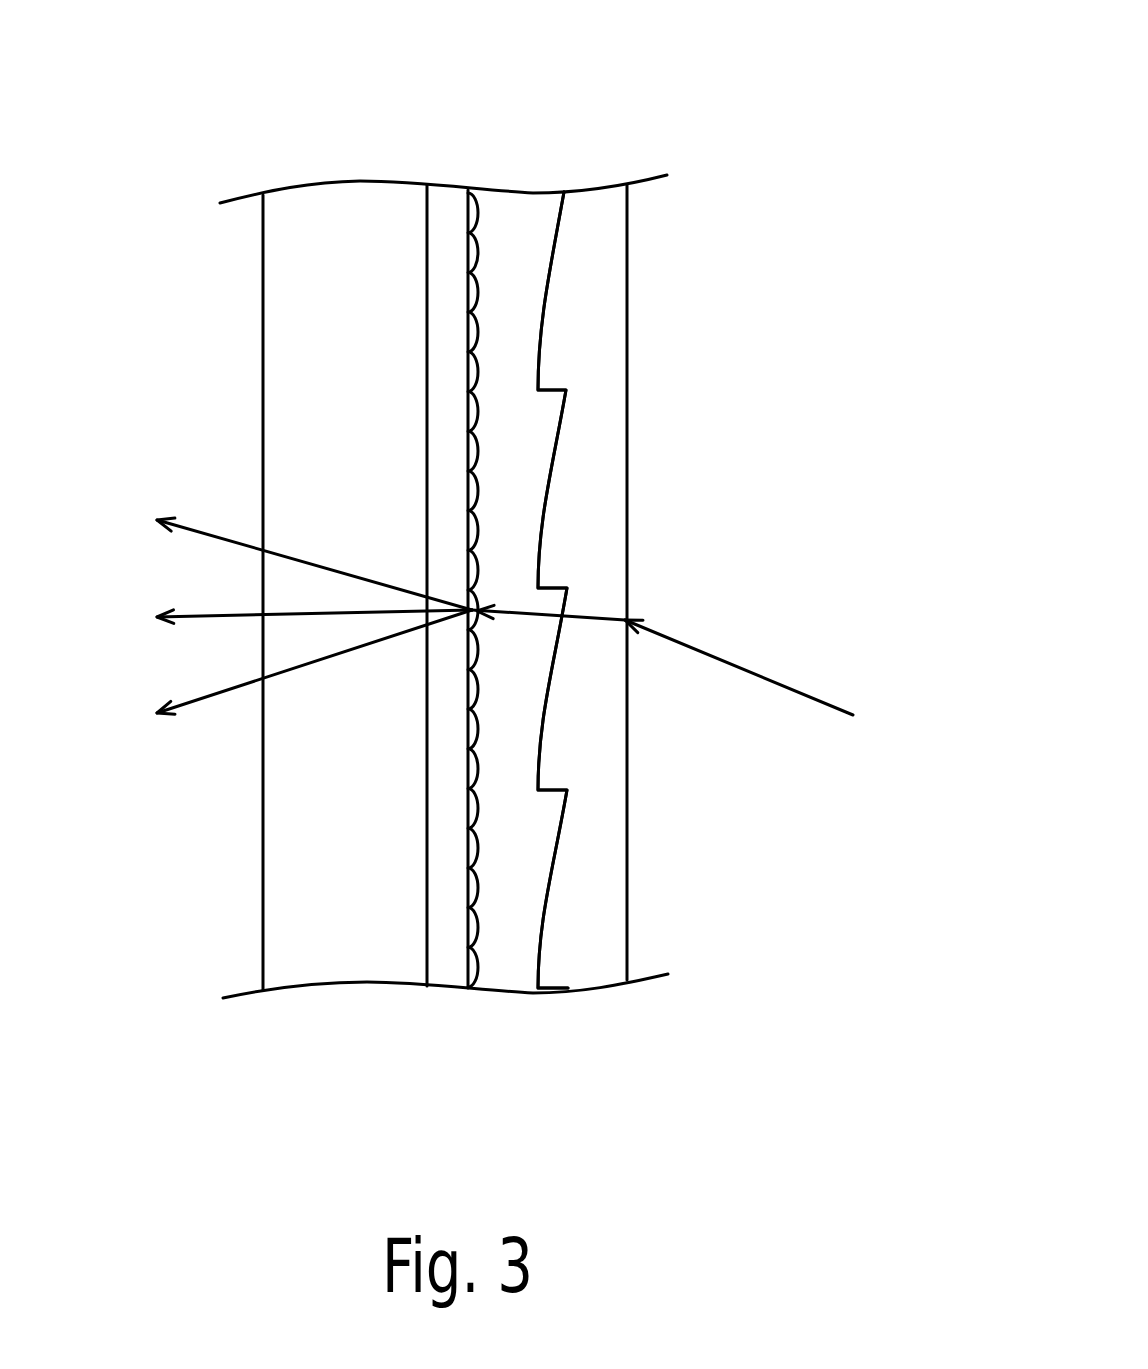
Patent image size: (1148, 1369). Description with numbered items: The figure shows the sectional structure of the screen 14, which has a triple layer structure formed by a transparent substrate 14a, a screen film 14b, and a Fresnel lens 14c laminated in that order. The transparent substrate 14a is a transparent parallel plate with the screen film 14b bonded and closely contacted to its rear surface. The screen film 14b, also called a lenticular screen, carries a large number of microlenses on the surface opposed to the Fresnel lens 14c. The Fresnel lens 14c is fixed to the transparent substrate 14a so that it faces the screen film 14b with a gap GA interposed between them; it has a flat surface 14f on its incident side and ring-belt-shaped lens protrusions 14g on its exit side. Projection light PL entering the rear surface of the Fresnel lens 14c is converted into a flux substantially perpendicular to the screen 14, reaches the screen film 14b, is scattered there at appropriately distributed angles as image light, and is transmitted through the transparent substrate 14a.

The screen 14 is at (692, 137).
The transparent substrate 14a is at (327, 972).
The screen film 14b is at (447, 977).
The Fresnel lens 14c is at (605, 978).
The flat surface 14f is at (627, 307).
The lens protrusions 14g is at (540, 337).
The gap GA is at (523, 213).
The projection light PL is at (740, 667).